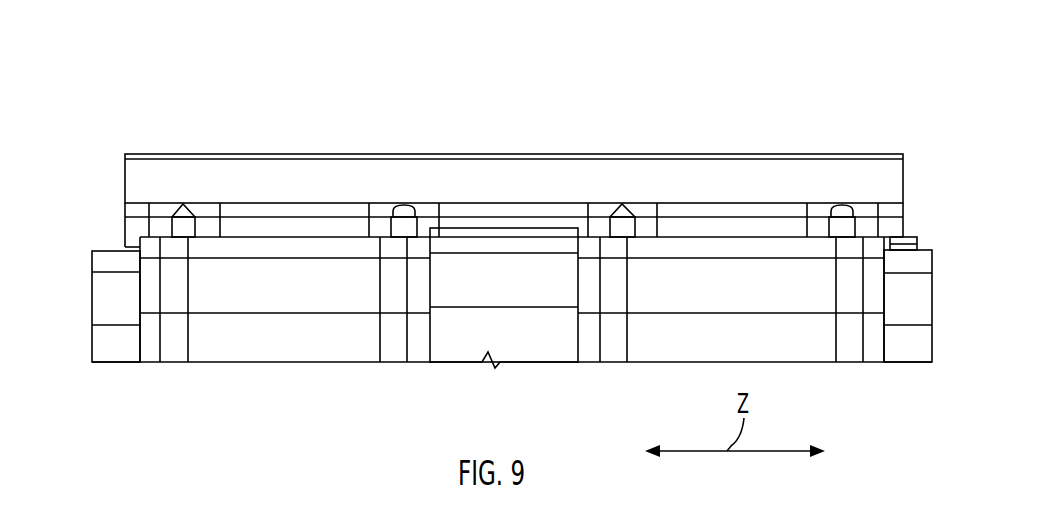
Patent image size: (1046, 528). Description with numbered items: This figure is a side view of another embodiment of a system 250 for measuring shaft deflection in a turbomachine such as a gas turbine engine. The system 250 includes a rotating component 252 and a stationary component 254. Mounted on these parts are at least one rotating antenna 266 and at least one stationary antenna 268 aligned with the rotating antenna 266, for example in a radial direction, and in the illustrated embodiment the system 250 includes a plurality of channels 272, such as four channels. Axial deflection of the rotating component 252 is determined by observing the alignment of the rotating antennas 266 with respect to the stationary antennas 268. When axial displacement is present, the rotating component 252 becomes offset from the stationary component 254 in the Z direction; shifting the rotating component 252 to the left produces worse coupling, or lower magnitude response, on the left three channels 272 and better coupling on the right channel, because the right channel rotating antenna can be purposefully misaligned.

The system 250 is at (501, 222).
The rotating component 252 is at (99, 292).
The stationary component 254 is at (197, 176).
The rotating antenna 266 is at (173, 345).
The stationary antenna 268 is at (183, 227).
The channel 272 is at (247, 266).